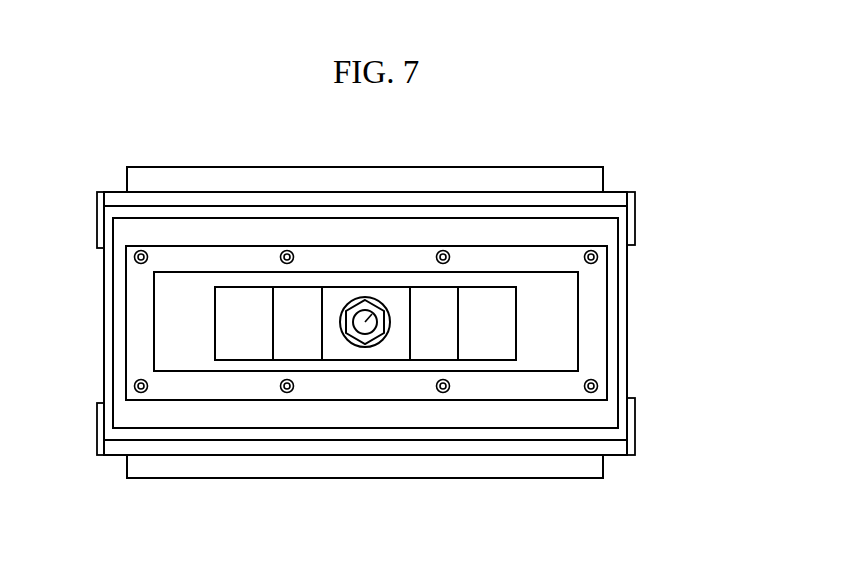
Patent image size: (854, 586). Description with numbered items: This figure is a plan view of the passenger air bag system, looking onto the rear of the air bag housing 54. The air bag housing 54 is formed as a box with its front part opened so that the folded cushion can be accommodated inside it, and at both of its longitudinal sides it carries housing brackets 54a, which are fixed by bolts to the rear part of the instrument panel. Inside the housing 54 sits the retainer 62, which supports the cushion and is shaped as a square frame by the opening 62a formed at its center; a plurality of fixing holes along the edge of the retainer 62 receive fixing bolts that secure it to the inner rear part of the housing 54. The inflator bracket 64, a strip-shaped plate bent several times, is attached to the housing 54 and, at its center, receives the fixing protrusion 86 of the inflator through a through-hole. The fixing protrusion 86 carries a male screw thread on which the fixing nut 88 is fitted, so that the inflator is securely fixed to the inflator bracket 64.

The air bag housing 54 is at (378, 432).
The housing brackets 54a is at (532, 467).
The retainer 62 is at (593, 351).
The opening 62a is at (538, 312).
The inflator bracket 64 is at (242, 320).
The fixing protrusion 86 is at (360, 302).
The fixing nut 88 is at (352, 303).